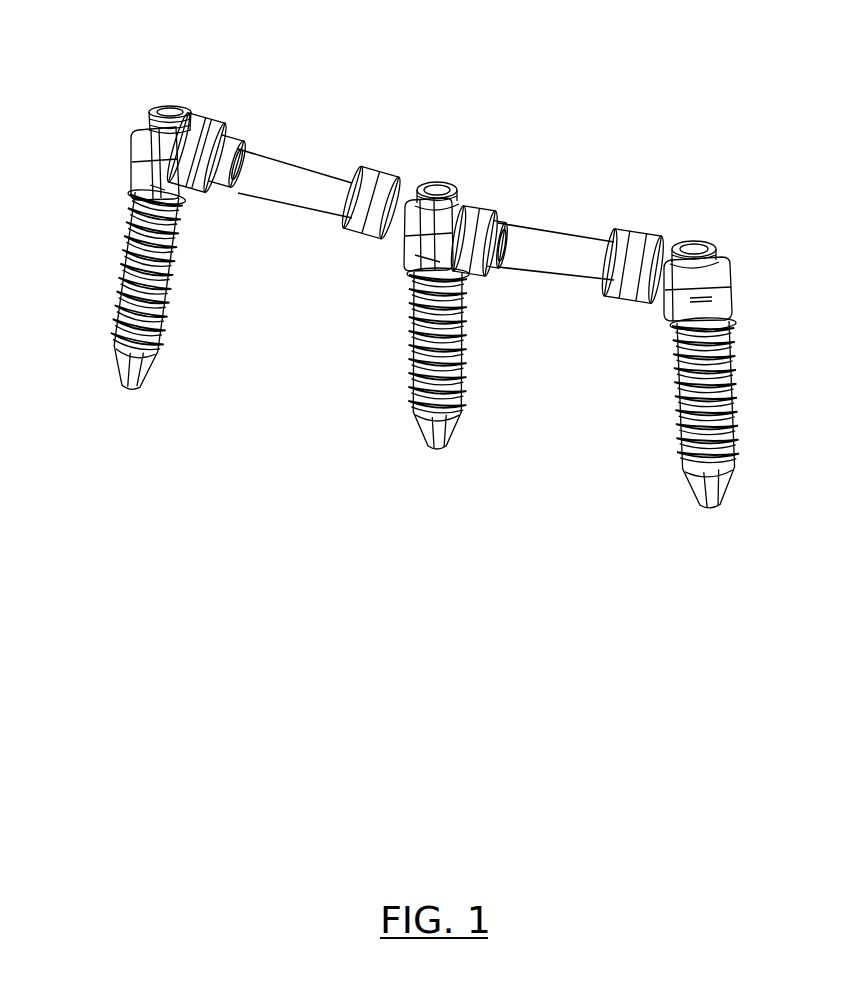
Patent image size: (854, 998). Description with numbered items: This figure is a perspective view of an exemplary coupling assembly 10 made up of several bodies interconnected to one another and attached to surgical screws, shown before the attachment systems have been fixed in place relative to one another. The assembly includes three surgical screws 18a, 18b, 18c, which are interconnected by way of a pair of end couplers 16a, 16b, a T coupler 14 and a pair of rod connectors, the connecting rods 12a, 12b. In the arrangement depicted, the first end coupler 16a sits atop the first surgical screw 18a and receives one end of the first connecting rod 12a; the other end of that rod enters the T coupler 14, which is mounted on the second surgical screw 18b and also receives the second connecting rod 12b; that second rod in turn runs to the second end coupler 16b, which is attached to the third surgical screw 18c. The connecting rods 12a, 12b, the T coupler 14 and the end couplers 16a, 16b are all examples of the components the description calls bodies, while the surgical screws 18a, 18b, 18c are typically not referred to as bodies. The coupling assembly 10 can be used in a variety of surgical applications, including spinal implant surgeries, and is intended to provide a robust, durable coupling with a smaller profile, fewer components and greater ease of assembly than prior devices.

The coupling assembly 10 is at (118, 58).
The connecting rod 12a is at (270, 153).
The connecting rod 12b is at (544, 228).
The T coupler 14 is at (466, 202).
The end coupler 16a is at (134, 150).
The end coupler 16b is at (730, 272).
The surgical screw 18a is at (116, 343).
The surgical screw 18b is at (416, 427).
The surgical screw 18c is at (684, 452).